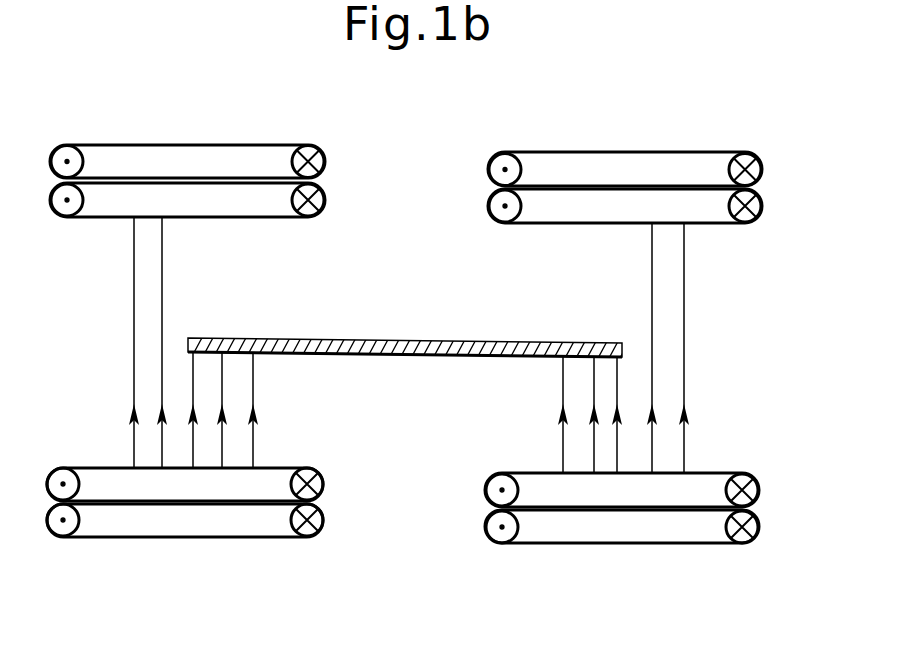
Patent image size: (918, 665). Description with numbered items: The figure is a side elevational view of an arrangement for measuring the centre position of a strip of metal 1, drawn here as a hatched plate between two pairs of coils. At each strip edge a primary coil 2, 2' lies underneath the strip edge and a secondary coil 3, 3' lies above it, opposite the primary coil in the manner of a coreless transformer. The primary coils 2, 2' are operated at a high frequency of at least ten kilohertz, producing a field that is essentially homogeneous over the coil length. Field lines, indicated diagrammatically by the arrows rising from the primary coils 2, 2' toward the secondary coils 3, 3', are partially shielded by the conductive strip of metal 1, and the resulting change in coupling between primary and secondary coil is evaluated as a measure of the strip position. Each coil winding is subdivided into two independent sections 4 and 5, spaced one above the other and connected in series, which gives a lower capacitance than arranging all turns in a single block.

The strip of metal 1 is at (383, 357).
The primary coil 2 is at (622, 546).
The primary coil 2' is at (185, 539).
The secondary coil 3 is at (625, 145).
The secondary coil 3' is at (187, 138).
The coil winding section 4 is at (758, 170).
The coil winding section 5 is at (759, 212).